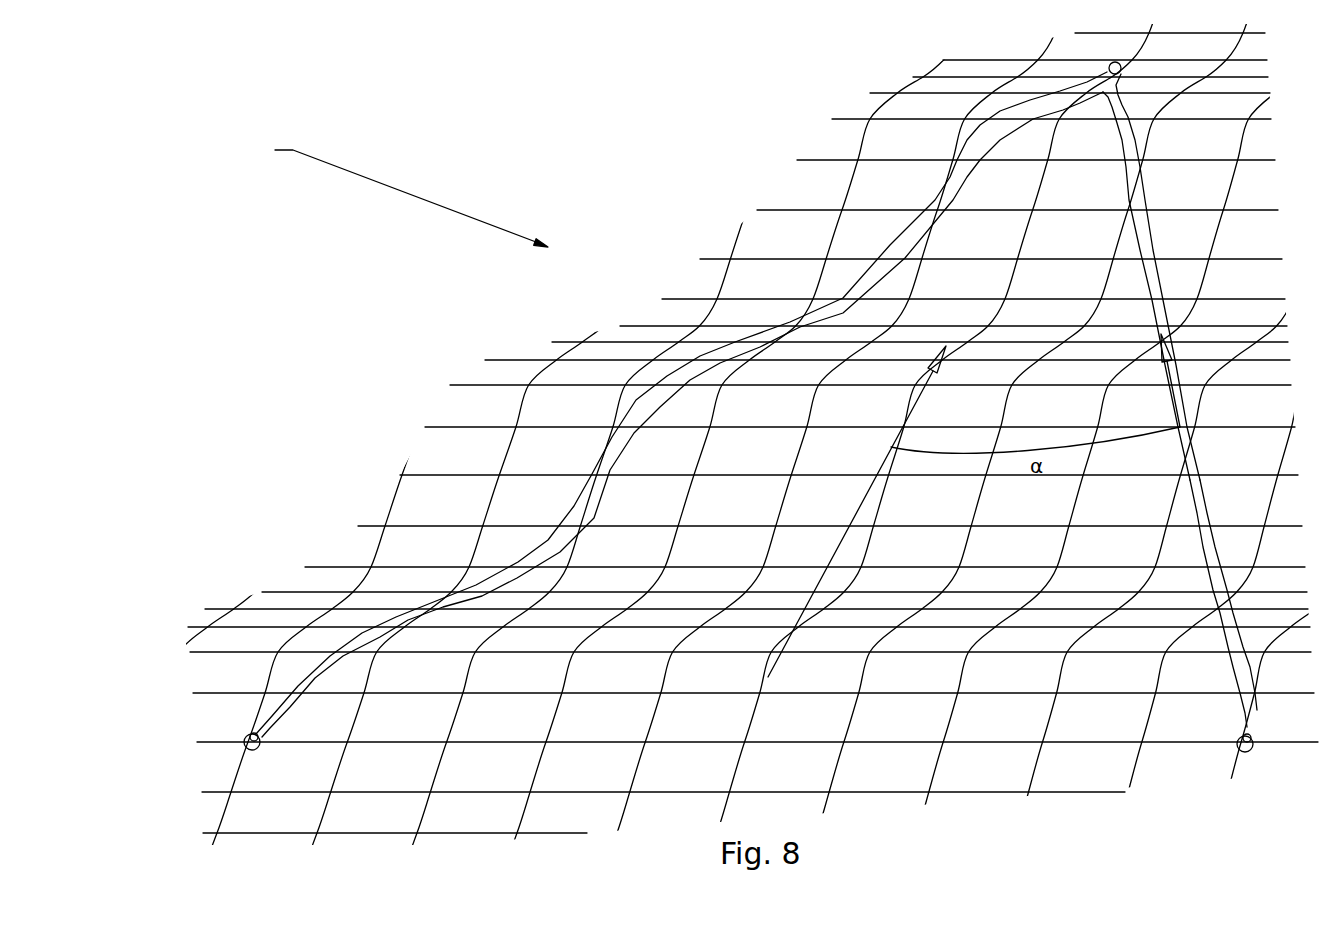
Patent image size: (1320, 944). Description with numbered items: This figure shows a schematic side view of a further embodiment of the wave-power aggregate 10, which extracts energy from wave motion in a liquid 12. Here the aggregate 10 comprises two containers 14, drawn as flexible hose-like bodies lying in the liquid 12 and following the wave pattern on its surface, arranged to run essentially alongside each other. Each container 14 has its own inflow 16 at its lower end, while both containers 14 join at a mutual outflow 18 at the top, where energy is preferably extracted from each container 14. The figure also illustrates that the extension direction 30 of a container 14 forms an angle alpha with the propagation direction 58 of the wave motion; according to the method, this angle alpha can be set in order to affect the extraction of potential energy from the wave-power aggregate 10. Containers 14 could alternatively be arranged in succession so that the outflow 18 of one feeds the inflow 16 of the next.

The wave-power aggregate 10 is at (410, 188).
The liquid 12 is at (832, 118).
The container 14 is at (758, 404).
The inflow 16 is at (252, 734).
The outflow 18 is at (1108, 66).
The extension direction 30 is at (1233, 672).
The propagation direction 58 is at (768, 677).